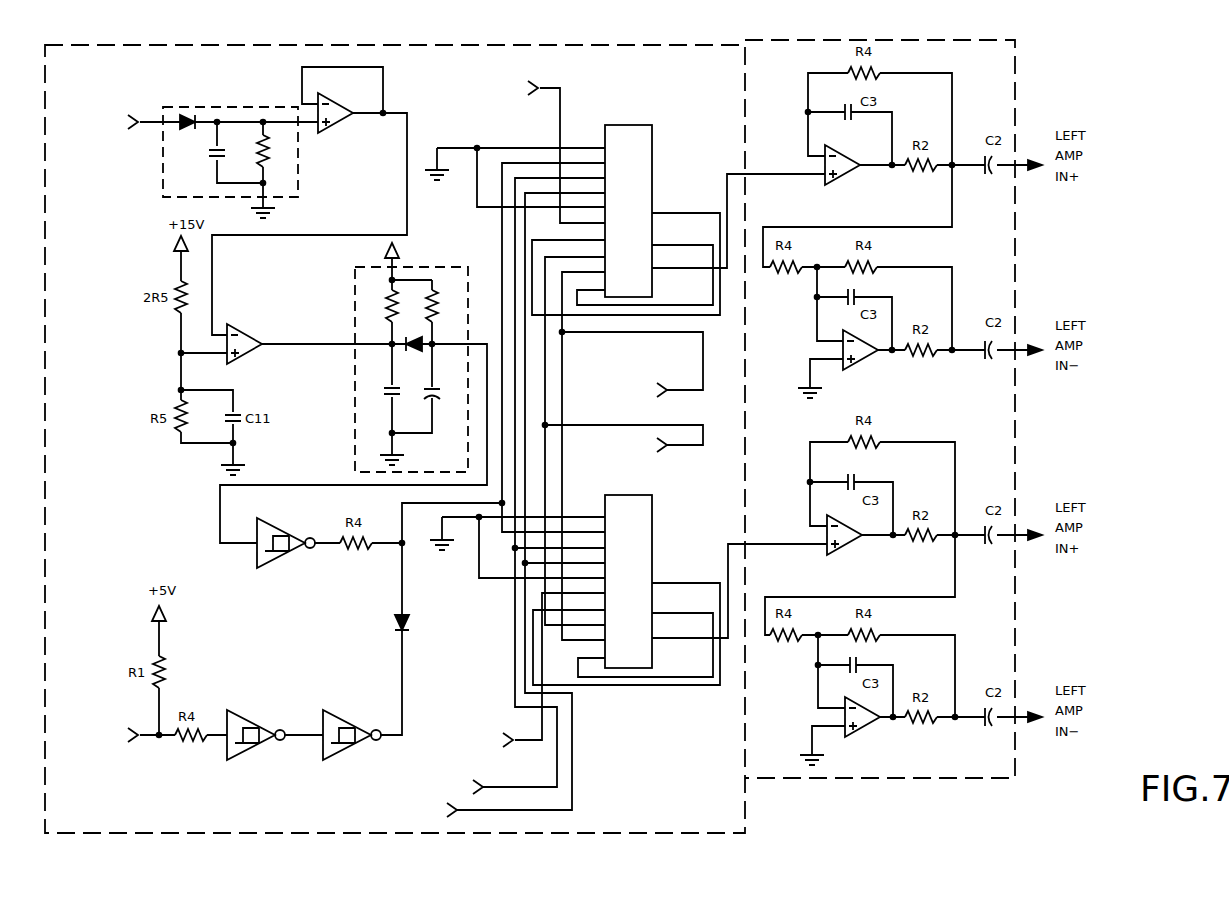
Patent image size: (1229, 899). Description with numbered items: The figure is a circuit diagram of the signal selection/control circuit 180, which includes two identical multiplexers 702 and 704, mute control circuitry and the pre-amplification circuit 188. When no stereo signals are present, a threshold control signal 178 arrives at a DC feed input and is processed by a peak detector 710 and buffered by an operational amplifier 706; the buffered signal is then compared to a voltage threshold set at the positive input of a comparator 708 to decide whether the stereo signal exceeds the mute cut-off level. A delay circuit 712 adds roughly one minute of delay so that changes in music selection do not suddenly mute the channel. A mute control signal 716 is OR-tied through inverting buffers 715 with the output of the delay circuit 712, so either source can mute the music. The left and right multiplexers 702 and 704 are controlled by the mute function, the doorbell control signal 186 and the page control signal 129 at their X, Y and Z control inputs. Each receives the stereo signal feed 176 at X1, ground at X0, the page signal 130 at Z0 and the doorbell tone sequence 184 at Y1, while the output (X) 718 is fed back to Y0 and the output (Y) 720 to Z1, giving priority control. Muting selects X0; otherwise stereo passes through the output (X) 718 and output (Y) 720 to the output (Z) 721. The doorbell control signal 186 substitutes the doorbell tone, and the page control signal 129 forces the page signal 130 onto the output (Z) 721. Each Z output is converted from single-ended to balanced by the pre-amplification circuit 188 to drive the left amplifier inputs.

The threshold control signal 178 is at (107, 112).
The peak detector 710 is at (276, 106).
The operational amplifier 706 is at (347, 110).
The comparator 708 is at (246, 332).
The delay circuit 712 is at (451, 265).
The stereo signal feed 176 is at (536, 84).
The left multiplexer 702 is at (633, 137).
The right multiplexer 704 is at (652, 542).
The output (X) 718 is at (652, 213).
The output (Y) 720 is at (652, 245).
The output (Z) 721 is at (752, 173).
The page signal 130 is at (687, 390).
The doorbell tone sequence 184 is at (670, 447).
The inverting buffer 715 is at (292, 569).
The mute control signal 716 is at (100, 766).
The doorbell control signal 186 is at (557, 748).
The page control signal 129 is at (572, 797).
The signal selection/control circuit 180 is at (748, 797).
The pre-amplification circuit 188 is at (978, 782).